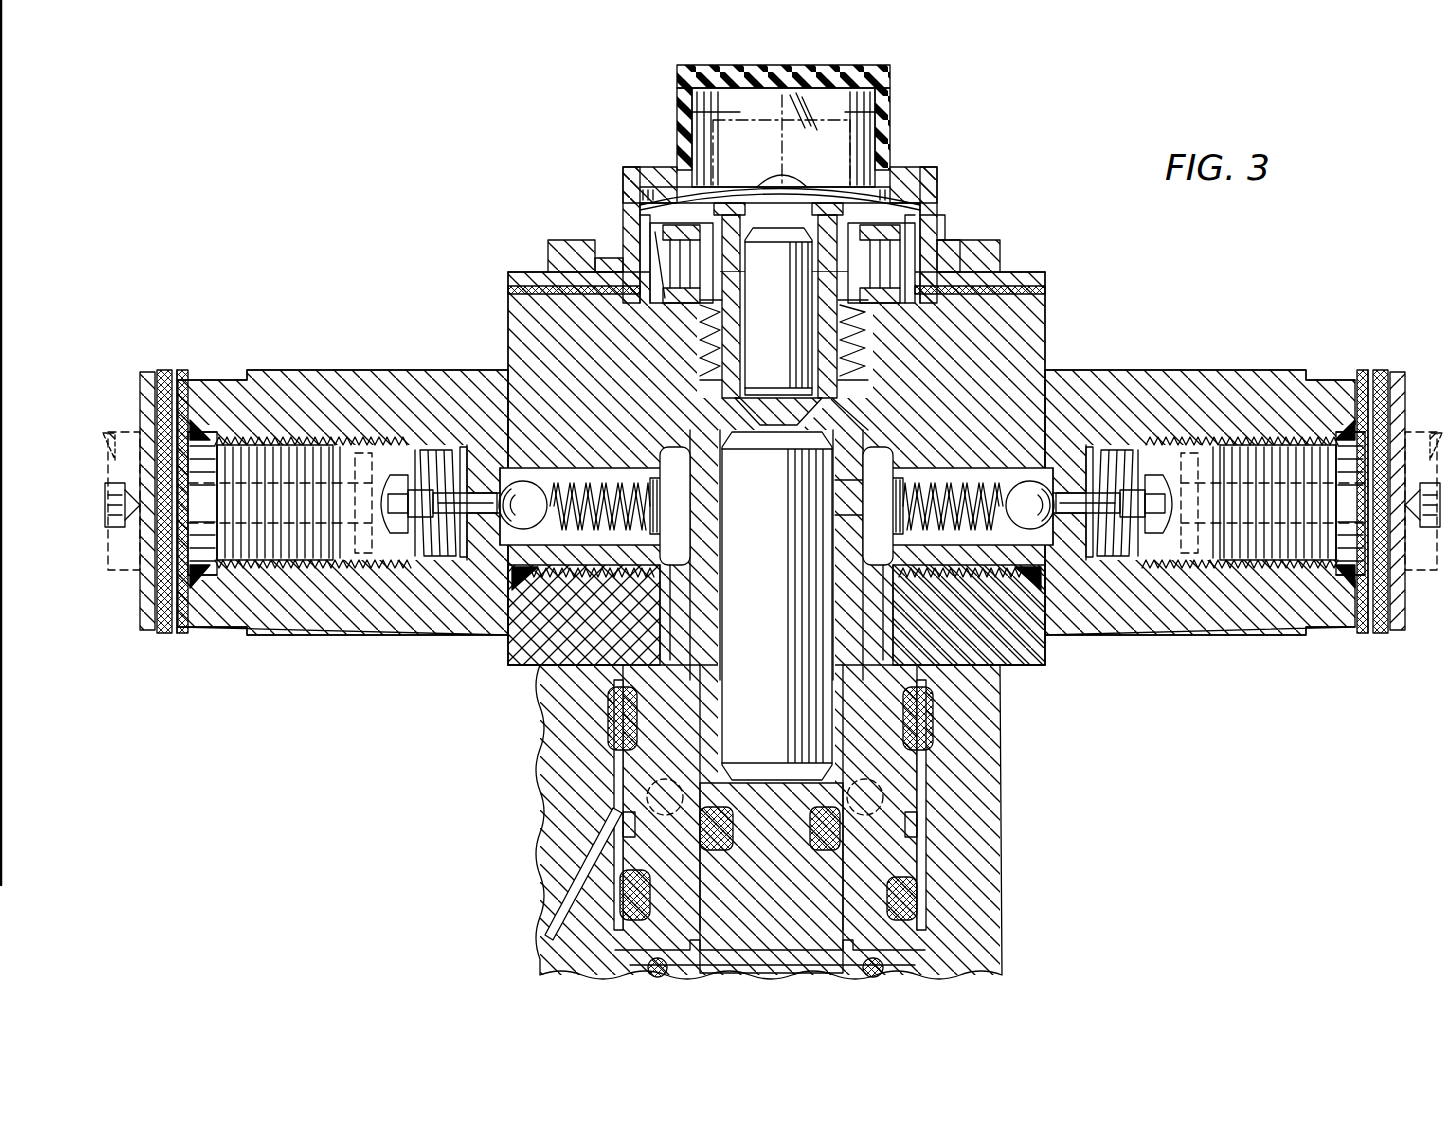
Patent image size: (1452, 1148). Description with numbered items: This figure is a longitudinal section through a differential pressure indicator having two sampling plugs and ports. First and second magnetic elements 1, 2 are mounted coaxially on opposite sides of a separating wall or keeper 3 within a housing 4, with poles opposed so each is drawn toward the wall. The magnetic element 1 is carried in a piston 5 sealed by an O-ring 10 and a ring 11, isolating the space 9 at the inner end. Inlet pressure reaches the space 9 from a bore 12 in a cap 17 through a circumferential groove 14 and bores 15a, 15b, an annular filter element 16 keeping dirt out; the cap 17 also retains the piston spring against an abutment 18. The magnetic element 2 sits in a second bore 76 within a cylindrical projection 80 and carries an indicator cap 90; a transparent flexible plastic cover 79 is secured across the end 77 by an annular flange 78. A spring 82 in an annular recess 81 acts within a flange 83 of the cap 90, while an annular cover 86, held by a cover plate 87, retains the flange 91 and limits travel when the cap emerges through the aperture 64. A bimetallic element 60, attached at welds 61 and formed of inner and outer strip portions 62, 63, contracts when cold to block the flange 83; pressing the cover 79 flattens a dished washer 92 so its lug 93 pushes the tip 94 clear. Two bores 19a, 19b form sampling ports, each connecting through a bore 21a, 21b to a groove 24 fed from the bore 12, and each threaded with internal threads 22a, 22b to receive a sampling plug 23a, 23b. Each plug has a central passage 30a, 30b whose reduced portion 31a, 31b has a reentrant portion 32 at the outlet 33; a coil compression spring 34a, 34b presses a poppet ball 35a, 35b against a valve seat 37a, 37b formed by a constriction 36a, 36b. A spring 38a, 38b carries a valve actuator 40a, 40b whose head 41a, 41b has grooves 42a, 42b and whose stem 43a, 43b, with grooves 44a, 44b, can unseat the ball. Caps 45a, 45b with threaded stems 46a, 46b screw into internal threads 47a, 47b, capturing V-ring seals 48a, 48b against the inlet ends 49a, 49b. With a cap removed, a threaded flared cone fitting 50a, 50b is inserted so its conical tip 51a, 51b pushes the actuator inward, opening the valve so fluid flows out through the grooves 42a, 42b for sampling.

The first magnetic element 1 is at (777, 624).
The second magnetic element 2 is at (784, 352).
The wall or keeper 3 is at (806, 425).
The housing 4 is at (1052, 336).
The piston 5 is at (774, 929).
The space 9 is at (848, 452).
The O-ring 10 is at (735, 825).
The ring 11 is at (722, 848).
The bore 12 is at (590, 860).
The circumferential groove 14 is at (920, 845).
The port 15a is at (665, 818).
The port 15b is at (865, 818).
The annular filter element 16 is at (612, 800).
The cap 17 is at (990, 915).
The abutment 18 is at (895, 955).
The bore 19a is at (665, 568).
The bore 19b is at (885, 447).
The bore 21a is at (668, 650).
The bore 21b is at (878, 668).
The internal threads 22a is at (604, 747).
The internal threads 22b is at (944, 650).
The sampling plug 23a is at (293, 368).
The sampling plug 23b is at (1160, 366).
The groove 24 is at (935, 812).
The central passage 30a is at (330, 565).
The central passage 30b is at (1262, 470).
The reduced portion 31a is at (562, 470).
The reduced portion 31b is at (985, 548).
The reentrant portion 32 is at (890, 480).
The outlet 33 is at (890, 515).
The coil compression spring 34a is at (612, 480).
The coil compression spring 34b is at (905, 535).
The poppet ball 35a is at (548, 545).
The poppet ball 35b is at (958, 462).
The constriction 36a is at (480, 480).
The constriction 36b is at (1066, 550).
The valve seat 37a is at (505, 530).
The valve seat 37b is at (1042, 475).
The coil spring 38a is at (445, 590).
The coil spring 38b is at (1095, 455).
The valve actuator 40a is at (400, 472).
The valve actuator 40b is at (1160, 544).
The head 41a is at (397, 475).
The head 41b is at (1157, 540).
The grooves 42a is at (356, 475).
The grooves 42b is at (1192, 530).
The stem 43a is at (462, 450).
The stem 43b is at (1095, 550).
The grooves 44a is at (405, 560).
The grooves 44b is at (1140, 470).
The cap 45a is at (142, 632).
The cap 45b is at (1378, 430).
The threaded stem 46a is at (292, 600).
The threaded stem 46b is at (1310, 445).
The internal threads 47a is at (360, 590).
The internal threads 47b is at (1175, 445).
The V-ring seal 48a is at (212, 440).
The V-ring seal 48b is at (1335, 590).
The inlet end 49a is at (195, 632).
The inlet end 49b is at (1370, 630).
The threaded flared cone fitting 50a is at (118, 432).
The threaded flared cone fitting 50b is at (1428, 600).
The conical tip 51a is at (345, 450).
The conical tip 51b is at (1225, 428).
The bimetallic element 60 is at (625, 260).
The welds 61 is at (900, 282).
The inner strip portion 62 is at (862, 330).
The outer strip portion 63 is at (938, 242).
The aperture 64 is at (922, 228).
The second bore 76 is at (735, 398).
The end 77 is at (795, 183).
The annular flange 78 is at (783, 137).
The transparent flexible plastic cover 79 is at (690, 92).
The cylindrical projection 80 is at (822, 292).
The annular recess 81 is at (850, 365).
The second bias means 82 is at (702, 348).
The flange 83 is at (700, 316).
The annular cover 86 is at (920, 200).
The cover plate 87 is at (1010, 290).
The cap 90 is at (855, 195).
The flange 91 is at (665, 205).
The dished washer 92 is at (850, 188).
The lug 93 is at (655, 218).
The tip 94 is at (652, 245).